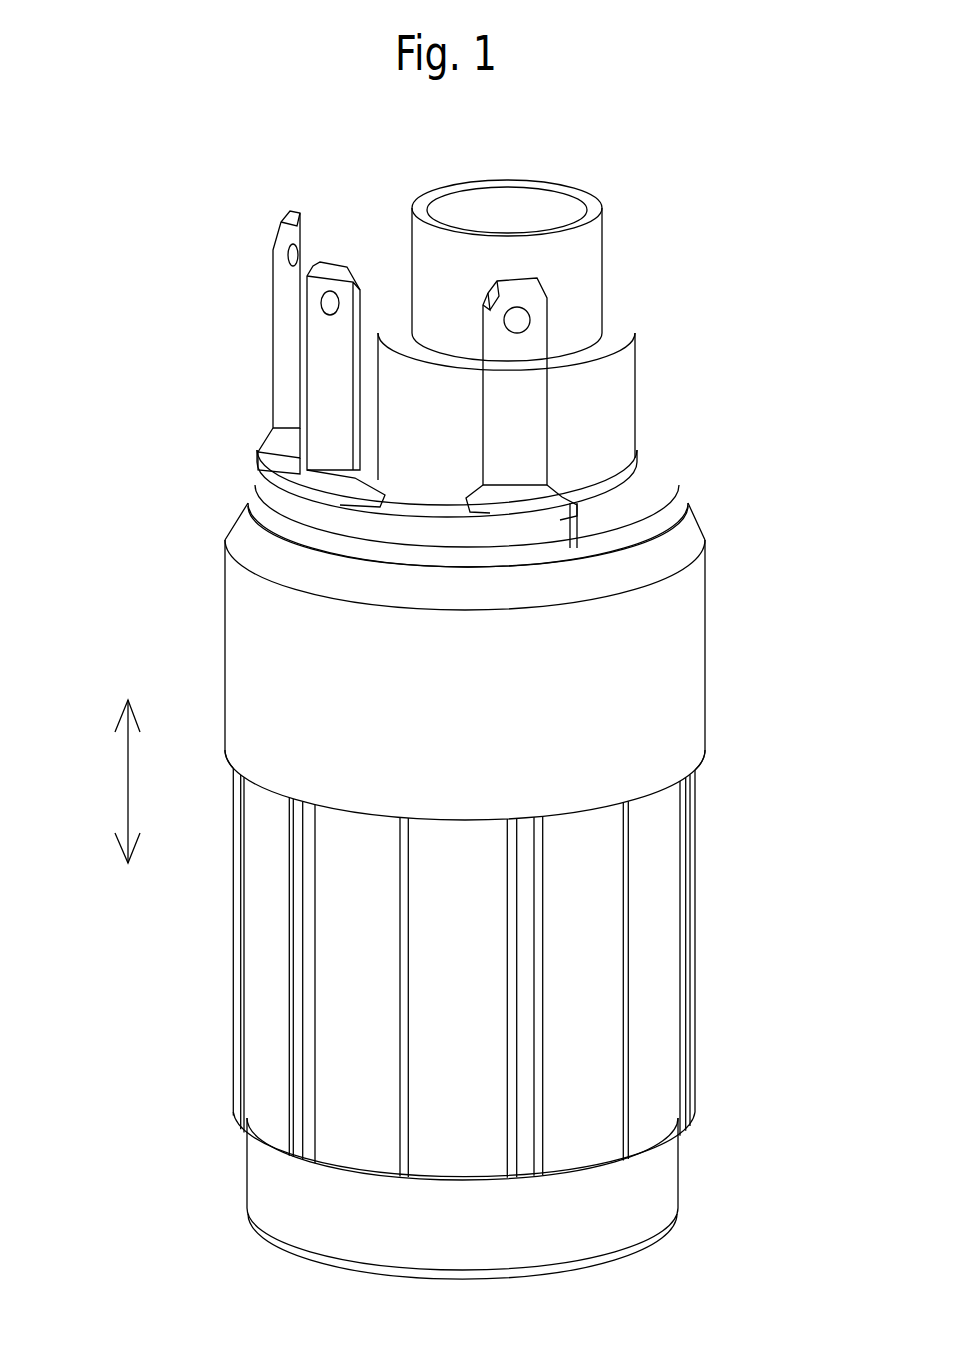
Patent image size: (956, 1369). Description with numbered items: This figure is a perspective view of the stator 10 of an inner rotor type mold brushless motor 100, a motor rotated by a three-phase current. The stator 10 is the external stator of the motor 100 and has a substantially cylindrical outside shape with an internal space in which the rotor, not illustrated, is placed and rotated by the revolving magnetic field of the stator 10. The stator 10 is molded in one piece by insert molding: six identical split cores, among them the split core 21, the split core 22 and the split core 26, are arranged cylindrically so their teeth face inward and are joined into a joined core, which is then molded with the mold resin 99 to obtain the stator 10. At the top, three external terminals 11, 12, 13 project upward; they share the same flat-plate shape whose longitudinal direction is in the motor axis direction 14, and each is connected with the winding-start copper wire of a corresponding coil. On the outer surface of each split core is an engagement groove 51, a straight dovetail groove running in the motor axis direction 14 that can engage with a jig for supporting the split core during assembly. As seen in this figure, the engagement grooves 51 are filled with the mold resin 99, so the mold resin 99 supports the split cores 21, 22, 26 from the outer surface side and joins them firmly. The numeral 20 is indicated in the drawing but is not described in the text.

The inner rotor type mold brushless motor 100 is at (163, 180).
The stator 10 is at (120, 430).
The external terminal 11 is at (527, 418).
The external terminal 12 is at (320, 347).
The external terminal 13 is at (273, 300).
The motor axis direction 14 is at (128, 782).
The housing 20 is at (782, 841).
The split core 21 is at (583, 940).
The split core 22 is at (352, 912).
The split core 26 is at (657, 1031).
The engagement groove 51 is at (293, 990).
The mold resin 99 is at (637, 668).